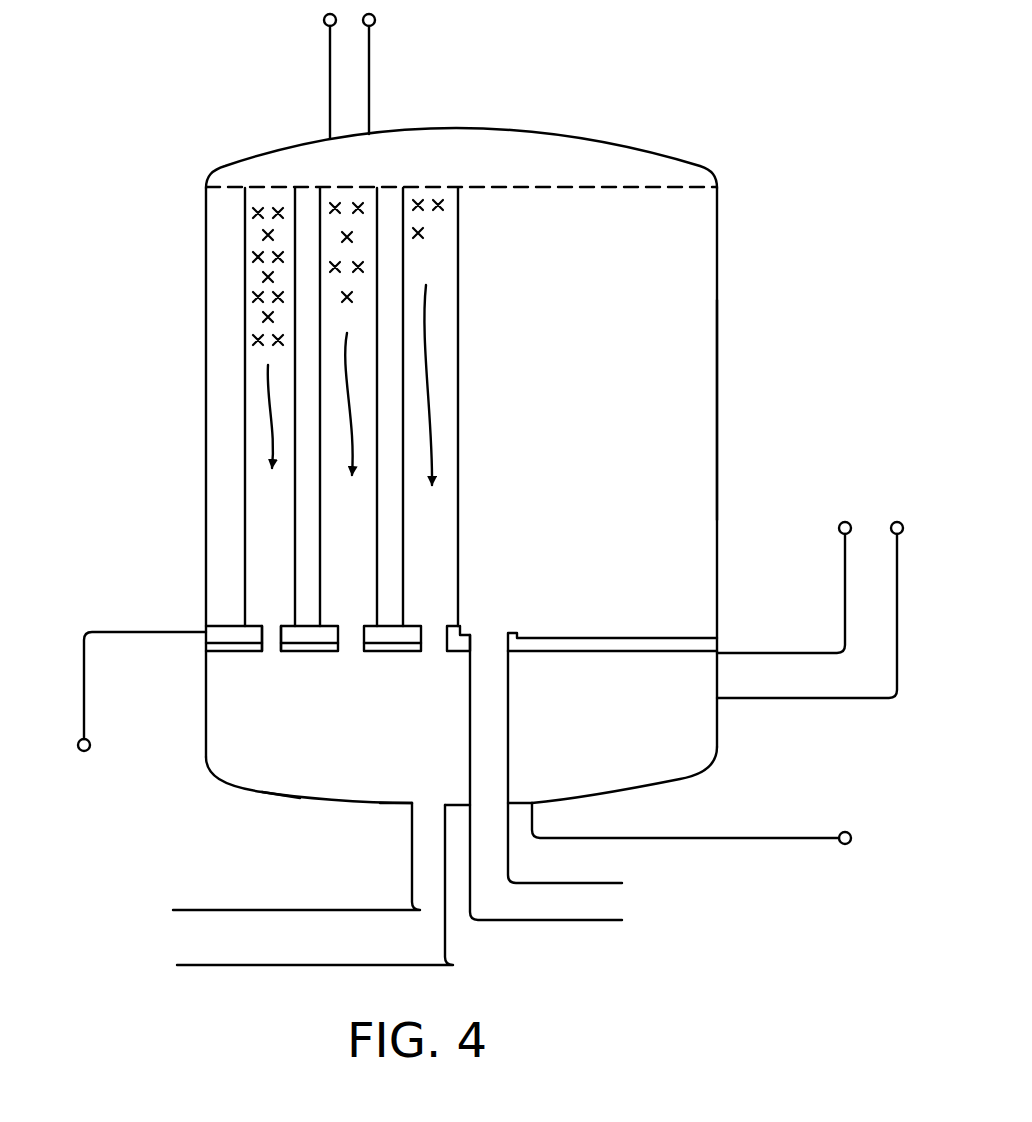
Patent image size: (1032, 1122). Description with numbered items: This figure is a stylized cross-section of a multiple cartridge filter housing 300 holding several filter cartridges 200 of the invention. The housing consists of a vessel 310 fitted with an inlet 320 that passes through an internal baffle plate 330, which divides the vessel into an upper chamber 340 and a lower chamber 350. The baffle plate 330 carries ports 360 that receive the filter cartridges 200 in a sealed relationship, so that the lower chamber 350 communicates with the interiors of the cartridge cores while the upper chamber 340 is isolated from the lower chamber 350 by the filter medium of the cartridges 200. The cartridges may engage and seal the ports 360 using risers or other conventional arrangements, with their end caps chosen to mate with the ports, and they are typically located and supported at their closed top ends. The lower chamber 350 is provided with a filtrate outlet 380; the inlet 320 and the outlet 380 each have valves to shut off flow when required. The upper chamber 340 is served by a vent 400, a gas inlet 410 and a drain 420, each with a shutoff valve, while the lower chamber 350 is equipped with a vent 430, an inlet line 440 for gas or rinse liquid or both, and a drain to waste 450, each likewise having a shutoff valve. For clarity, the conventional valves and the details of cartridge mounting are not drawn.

The filter cartridges 200 is at (403, 218).
The multiple cartridge filter housing 300 is at (766, 387).
The vessel 310 is at (726, 299).
The inlet 320 is at (556, 901).
The internal baffle plate 330 is at (656, 633).
The upper chamber 340 is at (508, 223).
The lower chamber 350 is at (328, 747).
The ports 360 is at (278, 659).
The filtrate outlet 380 is at (230, 938).
The vent 400 is at (402, 67).
The gas inlet 410 is at (300, 69).
The drain 420 is at (131, 713).
The vent 430 is at (795, 564).
The inlet line 440 is at (826, 586).
The drain to waste 450 is at (725, 830).